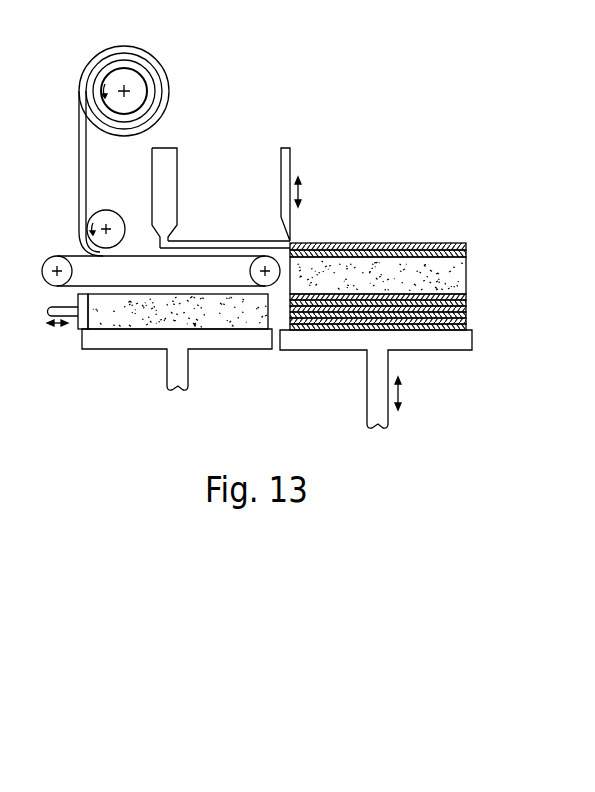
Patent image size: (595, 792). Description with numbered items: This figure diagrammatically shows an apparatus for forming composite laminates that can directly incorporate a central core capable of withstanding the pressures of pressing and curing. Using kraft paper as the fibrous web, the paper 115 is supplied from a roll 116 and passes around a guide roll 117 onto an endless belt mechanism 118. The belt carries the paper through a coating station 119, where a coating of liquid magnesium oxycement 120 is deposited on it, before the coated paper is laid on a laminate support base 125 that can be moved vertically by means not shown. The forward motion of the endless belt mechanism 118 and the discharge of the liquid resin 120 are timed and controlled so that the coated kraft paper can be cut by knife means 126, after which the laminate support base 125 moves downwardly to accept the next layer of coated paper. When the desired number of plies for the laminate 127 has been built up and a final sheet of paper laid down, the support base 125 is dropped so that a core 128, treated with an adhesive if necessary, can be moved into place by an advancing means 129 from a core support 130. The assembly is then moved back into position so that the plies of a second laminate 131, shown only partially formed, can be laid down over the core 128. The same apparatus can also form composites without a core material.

The paper 115 is at (80, 154).
The roll 116 is at (140, 80).
The guide roll 117 is at (112, 219).
The endless belt mechanism 118 is at (73, 255).
The coating station 119 is at (170, 171).
The liquid magnesium oxycement 120 is at (192, 247).
The laminate support base 125 is at (455, 342).
The knife means 126 is at (287, 162).
The laminate 127 is at (475, 294).
The core 128 is at (457, 282).
The advancing means 129 is at (62, 308).
The core support 130 is at (140, 343).
The laminate 131 is at (475, 243).